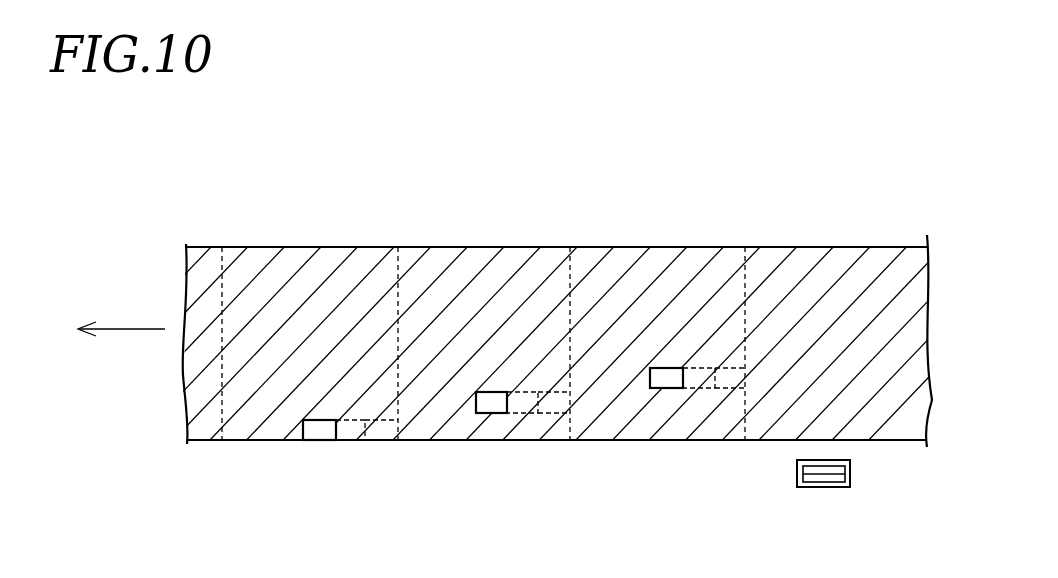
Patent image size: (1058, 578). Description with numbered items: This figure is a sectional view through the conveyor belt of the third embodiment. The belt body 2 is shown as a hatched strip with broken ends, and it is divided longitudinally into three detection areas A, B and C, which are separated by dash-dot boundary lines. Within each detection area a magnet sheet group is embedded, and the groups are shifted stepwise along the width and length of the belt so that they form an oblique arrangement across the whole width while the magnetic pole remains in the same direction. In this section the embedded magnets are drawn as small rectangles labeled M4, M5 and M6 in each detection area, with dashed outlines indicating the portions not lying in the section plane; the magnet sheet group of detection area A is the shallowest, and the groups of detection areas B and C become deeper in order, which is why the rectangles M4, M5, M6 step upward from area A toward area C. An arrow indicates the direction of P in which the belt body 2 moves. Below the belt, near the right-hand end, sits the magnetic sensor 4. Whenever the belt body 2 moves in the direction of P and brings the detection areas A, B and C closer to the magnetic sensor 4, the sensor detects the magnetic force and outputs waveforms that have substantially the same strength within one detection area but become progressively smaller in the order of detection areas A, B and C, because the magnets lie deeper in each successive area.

The belt body 2 is at (236, 244).
The magnetic sensor 4 is at (822, 487).
The detection area A is at (302, 247).
The detection area B is at (473, 247).
The detection area C is at (662, 247).
The direction of movement P is at (122, 332).
The mark M4 is at (303, 440).
The mark region M5 is at (353, 440).
The mark region M6 is at (385, 440).